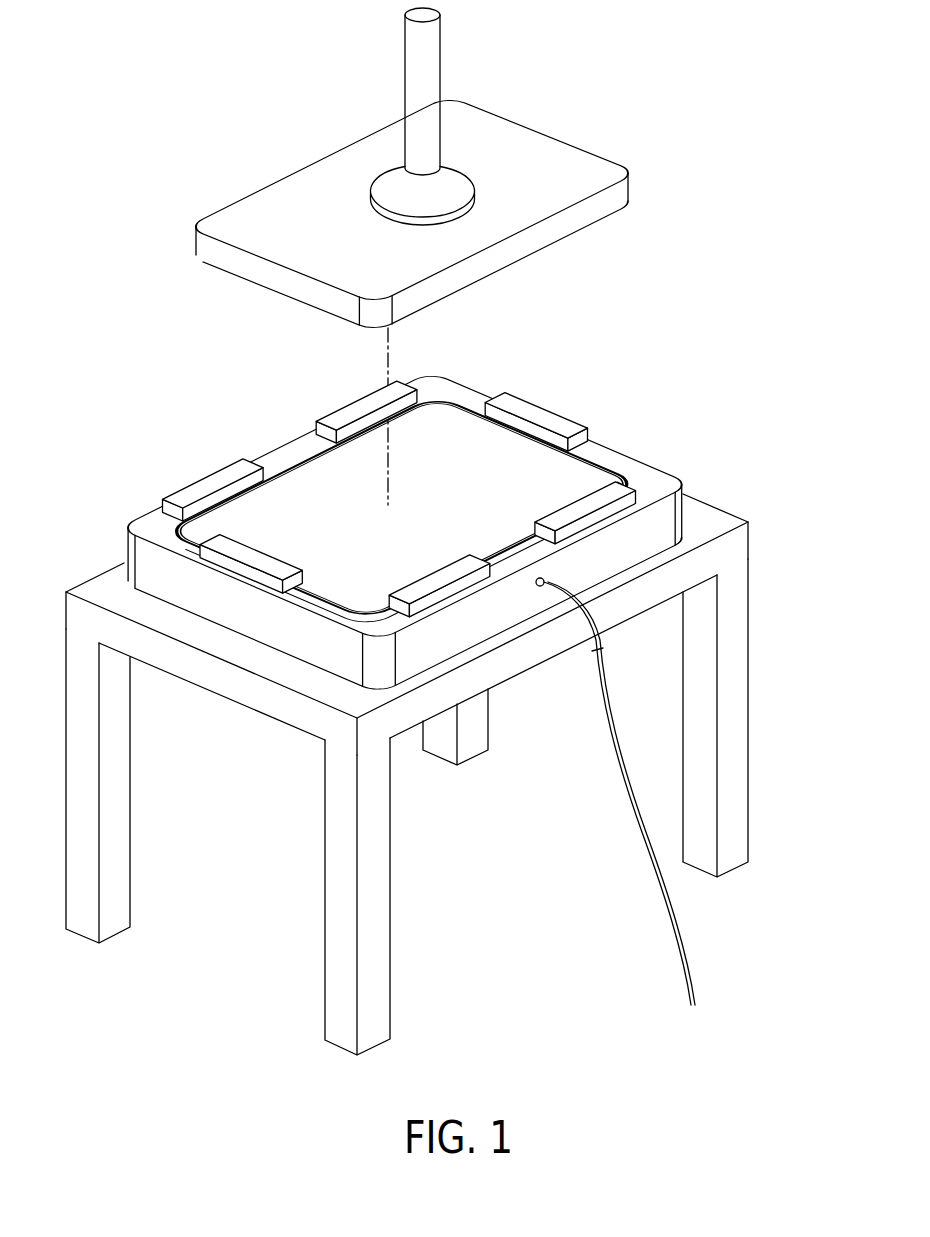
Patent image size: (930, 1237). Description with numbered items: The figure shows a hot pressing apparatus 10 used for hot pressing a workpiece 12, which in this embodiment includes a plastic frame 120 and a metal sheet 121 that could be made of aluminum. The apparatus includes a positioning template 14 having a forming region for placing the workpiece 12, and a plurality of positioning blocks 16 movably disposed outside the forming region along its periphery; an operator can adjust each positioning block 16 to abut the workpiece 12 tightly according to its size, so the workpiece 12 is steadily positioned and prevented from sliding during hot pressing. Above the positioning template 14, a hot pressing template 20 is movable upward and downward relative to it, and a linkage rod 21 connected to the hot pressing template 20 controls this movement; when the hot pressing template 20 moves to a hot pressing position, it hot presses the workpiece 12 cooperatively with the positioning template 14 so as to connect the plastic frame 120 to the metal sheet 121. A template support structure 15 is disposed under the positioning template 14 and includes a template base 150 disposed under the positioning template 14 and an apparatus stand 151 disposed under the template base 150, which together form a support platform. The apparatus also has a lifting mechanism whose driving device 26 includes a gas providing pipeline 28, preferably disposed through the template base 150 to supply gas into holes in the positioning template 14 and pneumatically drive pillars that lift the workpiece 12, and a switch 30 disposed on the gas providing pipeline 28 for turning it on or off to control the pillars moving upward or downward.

The hot pressing apparatus 10 is at (707, 66).
The workpiece 12 is at (700, 363).
The plastic frame 120 is at (597, 470).
The metal sheet 121 is at (520, 460).
The positioning template 14 is at (662, 470).
The template support structure 15 is at (798, 438).
The template base 150 is at (663, 532).
The apparatus stand 151 is at (745, 597).
The positioning blocks 16 is at (198, 478).
The hot pressing template 20 is at (535, 146).
The linkage rod 21 is at (418, 50).
The driving device 26 is at (582, 748).
The gas providing pipeline 28 is at (597, 682).
The switch 30 is at (543, 591).